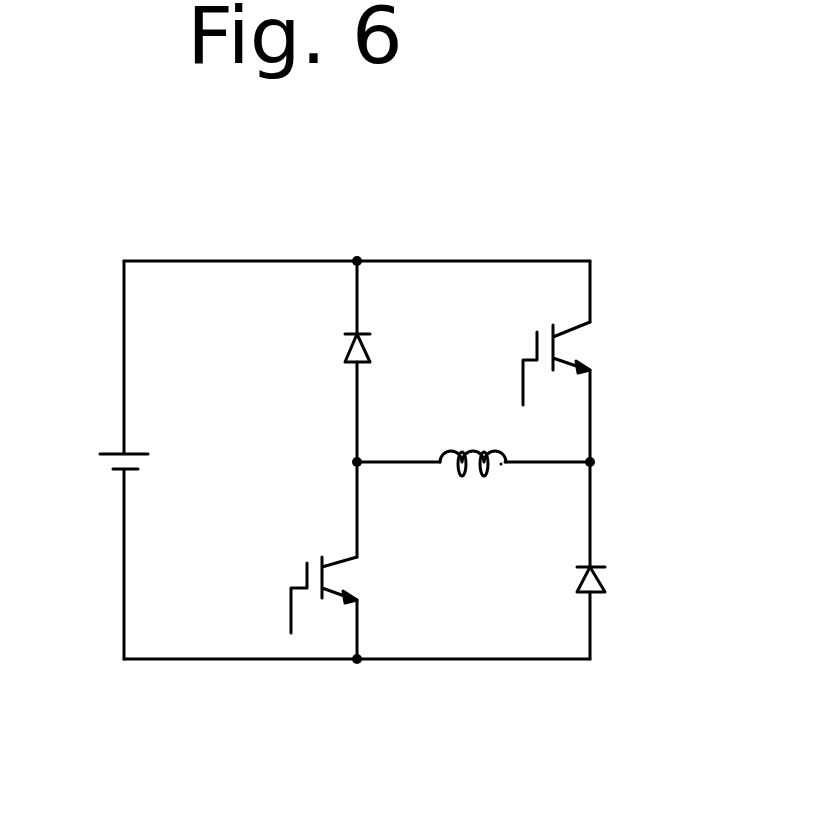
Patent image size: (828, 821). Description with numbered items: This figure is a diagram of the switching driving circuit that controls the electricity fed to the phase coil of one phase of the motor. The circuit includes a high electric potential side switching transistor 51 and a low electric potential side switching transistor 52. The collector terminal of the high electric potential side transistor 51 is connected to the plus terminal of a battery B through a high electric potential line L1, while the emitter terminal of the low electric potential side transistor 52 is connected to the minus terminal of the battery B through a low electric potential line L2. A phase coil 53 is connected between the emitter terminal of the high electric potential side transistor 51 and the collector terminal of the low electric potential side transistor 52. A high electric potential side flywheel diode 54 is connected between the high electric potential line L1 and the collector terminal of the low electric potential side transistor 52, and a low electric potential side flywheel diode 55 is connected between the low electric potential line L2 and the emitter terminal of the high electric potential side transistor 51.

The high electric potential line L1 is at (215, 261).
The low electric potential line L2 is at (216, 659).
The battery B is at (118, 453).
The high electric potential side switching transistor 51 is at (565, 330).
The low electric potential side switching transistor 52 is at (350, 557).
The phase coil 53 is at (470, 447).
The high electric potential side flywheel diode 54 is at (345, 348).
The low electric potential side flywheel diode 55 is at (605, 577).